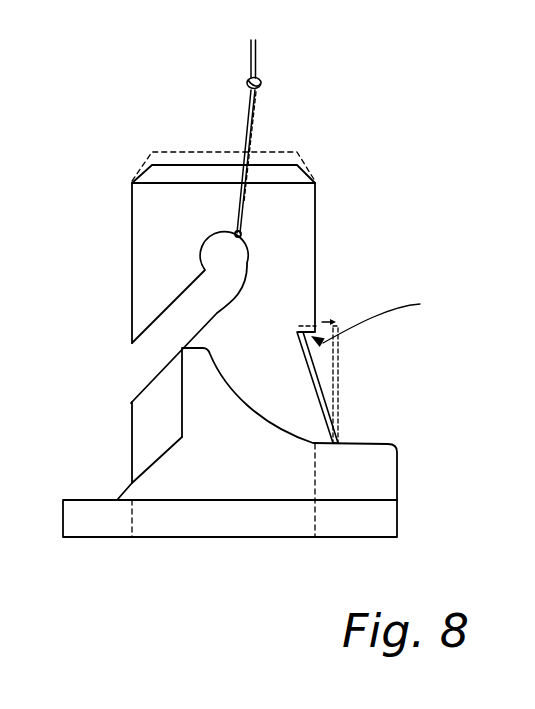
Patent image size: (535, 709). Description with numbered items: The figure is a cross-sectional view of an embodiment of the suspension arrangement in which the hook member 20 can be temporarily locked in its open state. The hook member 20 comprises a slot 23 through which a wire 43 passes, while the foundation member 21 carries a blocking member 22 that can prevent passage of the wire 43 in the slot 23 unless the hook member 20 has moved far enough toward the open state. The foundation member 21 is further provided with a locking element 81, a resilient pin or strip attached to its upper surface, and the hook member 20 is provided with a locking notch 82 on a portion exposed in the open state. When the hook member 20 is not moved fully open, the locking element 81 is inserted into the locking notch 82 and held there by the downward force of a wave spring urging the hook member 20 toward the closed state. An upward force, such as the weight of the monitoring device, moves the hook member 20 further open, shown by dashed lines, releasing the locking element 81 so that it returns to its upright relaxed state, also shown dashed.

The hook member 20 is at (150, 205).
The foundation member 21 is at (385, 518).
The blocking member 22 is at (202, 398).
The slot 23 is at (193, 310).
The wire 43 is at (256, 54).
The locking element 81 is at (316, 388).
The locking notch 82 is at (385, 322).